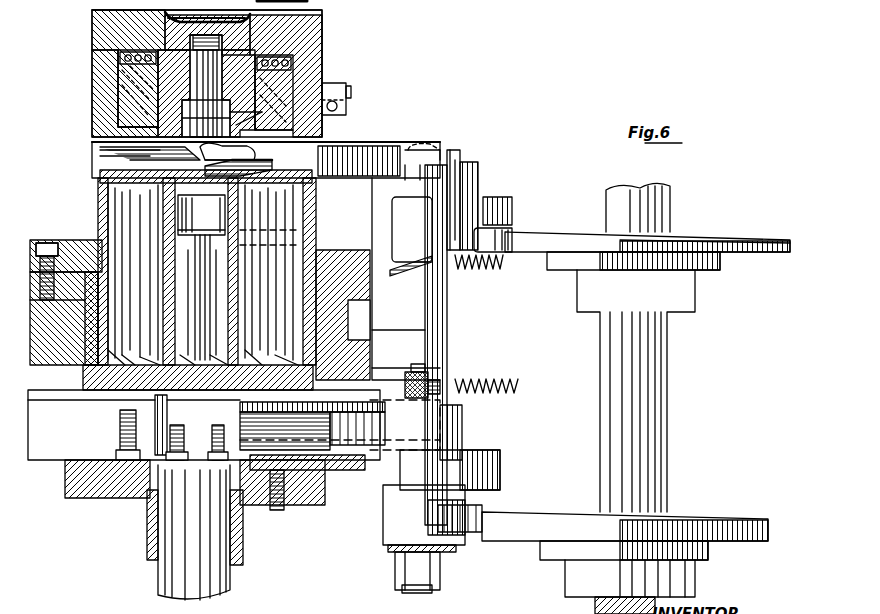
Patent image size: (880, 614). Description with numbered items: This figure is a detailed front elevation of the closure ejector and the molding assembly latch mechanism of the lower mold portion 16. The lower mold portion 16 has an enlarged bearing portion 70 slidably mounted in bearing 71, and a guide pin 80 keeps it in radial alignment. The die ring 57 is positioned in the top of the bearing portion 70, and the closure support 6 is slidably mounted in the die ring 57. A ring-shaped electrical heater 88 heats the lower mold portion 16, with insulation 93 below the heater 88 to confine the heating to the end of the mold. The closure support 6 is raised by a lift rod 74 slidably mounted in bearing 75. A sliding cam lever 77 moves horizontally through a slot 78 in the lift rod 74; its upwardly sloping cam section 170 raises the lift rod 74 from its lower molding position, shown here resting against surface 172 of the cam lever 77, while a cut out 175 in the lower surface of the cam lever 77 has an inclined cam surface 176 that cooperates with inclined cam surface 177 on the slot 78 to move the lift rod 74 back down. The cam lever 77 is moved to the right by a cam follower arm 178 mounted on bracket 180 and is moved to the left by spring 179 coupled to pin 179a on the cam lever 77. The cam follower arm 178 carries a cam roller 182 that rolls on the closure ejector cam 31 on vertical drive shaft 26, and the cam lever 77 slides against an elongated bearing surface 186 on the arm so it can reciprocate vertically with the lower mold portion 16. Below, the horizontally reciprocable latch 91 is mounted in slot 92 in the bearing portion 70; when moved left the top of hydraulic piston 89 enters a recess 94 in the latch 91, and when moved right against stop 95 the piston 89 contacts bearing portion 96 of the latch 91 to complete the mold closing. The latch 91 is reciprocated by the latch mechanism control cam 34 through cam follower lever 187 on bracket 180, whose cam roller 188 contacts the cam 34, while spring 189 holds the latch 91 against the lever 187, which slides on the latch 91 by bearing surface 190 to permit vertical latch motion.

The closure support 6 is at (292, 18).
The die ring 57 is at (243, 40).
The electrical heater 88 is at (300, 64).
The insulation 93 is at (292, 98).
The lower mold portion 16 is at (92, 101).
The bearing 75 is at (149, 88).
The lift rod 74 is at (213, 94).
The bearing 71 is at (256, 118).
The cam lever 77 is at (352, 148).
The surface 172 is at (150, 159).
The cam section 170 is at (214, 156).
The slot 78 is at (272, 162).
The bearing surface 186 is at (456, 192).
The cam follower arm 178 is at (471, 190).
The cam roller 182 is at (507, 230).
The closure ejector cam 31 is at (715, 235).
The inclined cam surface 177 is at (168, 190).
The inclined cam surface 176 is at (195, 271).
The cut out 175 is at (272, 271).
The pin 179a is at (430, 228).
The guide pin 80 is at (80, 240).
The spring 179 is at (498, 272).
The bearing portion 70 is at (98, 344).
The bracket 180 is at (450, 340).
The spring 189 is at (483, 380).
The vertical drive shaft 26 is at (652, 383).
The slot 92 is at (108, 396).
The bearing portion 96 is at (192, 447).
The recess 94 is at (275, 412).
The latch 91 is at (337, 428).
The bearing surface 190 is at (468, 434).
The stop 95 is at (342, 478).
The hydraulic piston 89 is at (217, 540).
The cam follower lever 187 is at (383, 530).
The cam roller 188 is at (483, 508).
The latch mechanism control cam 34 is at (703, 516).